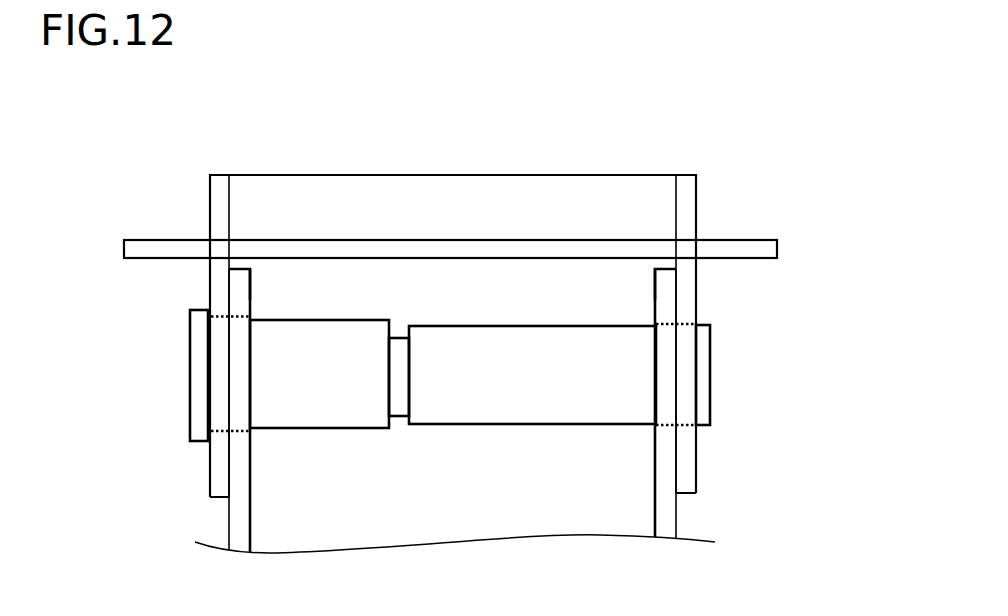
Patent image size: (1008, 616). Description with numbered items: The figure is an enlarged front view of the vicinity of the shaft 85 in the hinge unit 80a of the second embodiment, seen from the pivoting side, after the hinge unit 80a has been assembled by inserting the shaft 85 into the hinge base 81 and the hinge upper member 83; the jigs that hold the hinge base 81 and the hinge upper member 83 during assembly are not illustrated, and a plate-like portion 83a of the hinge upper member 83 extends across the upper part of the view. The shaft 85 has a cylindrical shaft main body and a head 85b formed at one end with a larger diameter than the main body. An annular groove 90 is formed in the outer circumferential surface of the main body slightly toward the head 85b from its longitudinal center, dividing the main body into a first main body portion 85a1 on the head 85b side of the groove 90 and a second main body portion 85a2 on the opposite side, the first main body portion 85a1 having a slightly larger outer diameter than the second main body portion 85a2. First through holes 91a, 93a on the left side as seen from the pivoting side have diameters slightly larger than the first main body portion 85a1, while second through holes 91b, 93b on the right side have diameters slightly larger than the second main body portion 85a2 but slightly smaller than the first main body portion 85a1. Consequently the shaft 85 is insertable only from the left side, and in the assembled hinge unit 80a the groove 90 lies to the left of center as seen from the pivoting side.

The hinge unit 80a is at (759, 194).
The hinge base 81 is at (665, 527).
The hinge upper member 83 is at (595, 187).
The plate portion 83a is at (158, 240).
The shaft 85 is at (710, 373).
The first main body portion 85a1 is at (298, 417).
The second main body portion 85a2 is at (538, 413).
The head 85b is at (195, 383).
The groove 90 is at (395, 422).
The first through hole 91a is at (240, 315).
The second through hole 91b is at (665, 322).
The first through hole 93a is at (215, 440).
The second through hole 93b is at (687, 428).